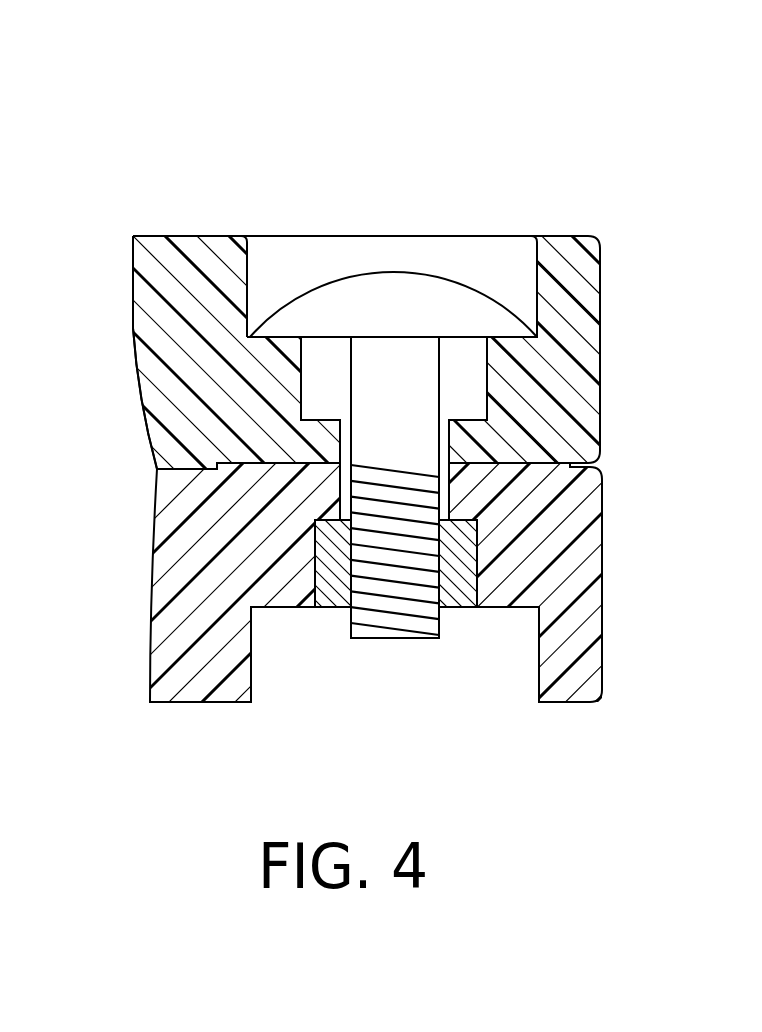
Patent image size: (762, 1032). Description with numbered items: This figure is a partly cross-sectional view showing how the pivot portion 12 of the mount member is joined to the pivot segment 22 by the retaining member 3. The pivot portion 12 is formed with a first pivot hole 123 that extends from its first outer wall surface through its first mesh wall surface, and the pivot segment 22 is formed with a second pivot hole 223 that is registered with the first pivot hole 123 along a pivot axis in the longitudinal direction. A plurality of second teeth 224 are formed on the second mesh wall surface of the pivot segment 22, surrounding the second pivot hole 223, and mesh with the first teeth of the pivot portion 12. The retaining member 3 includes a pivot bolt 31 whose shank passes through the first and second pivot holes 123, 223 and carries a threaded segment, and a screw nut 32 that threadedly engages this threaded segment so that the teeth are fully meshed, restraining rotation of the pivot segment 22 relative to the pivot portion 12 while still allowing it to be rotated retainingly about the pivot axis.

The pivot portion 12 is at (585, 332).
The first pivot hole 123 is at (240, 372).
The pivot segment 22 is at (563, 662).
The second pivot hole 223 is at (343, 490).
The second teeth 224 is at (505, 464).
The retaining member 3 is at (393, 435).
The pivot bolt 31 is at (348, 298).
The screw nut 32 is at (327, 568).